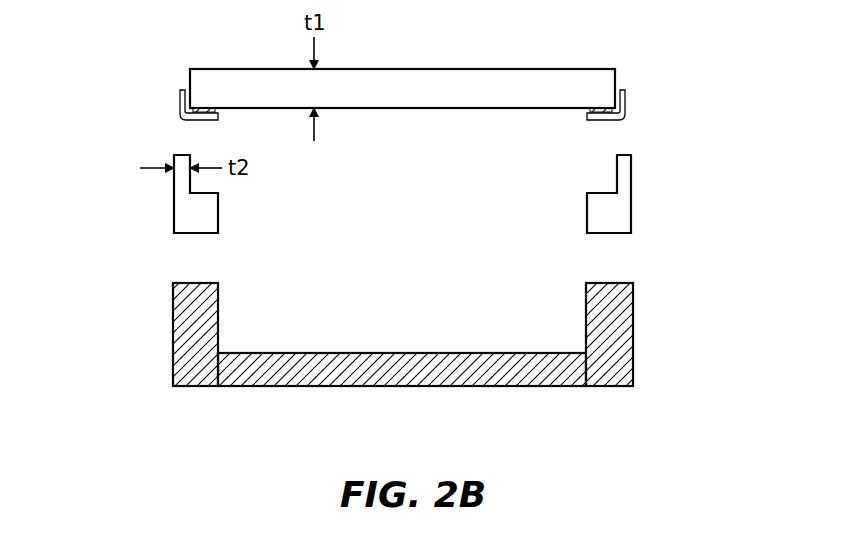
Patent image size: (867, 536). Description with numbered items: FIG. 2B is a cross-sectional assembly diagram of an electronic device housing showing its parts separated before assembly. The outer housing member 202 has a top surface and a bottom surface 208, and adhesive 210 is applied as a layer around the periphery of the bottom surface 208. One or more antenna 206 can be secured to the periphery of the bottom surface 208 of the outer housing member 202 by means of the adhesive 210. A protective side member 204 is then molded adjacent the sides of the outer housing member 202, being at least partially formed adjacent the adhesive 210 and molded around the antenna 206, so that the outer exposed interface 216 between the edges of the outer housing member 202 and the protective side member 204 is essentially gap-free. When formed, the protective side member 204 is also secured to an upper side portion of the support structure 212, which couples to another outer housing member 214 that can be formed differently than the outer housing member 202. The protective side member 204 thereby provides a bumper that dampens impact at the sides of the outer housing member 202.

The outer housing member 202 is at (402, 88).
The protective side member 204 is at (174, 215).
The antenna 206 is at (180, 100).
The bottom surface 208 is at (426, 110).
The adhesive 210 is at (215, 112).
The support structure 212 is at (173, 327).
The outer housing member 214 is at (316, 372).
The outer exposed interface 216 is at (191, 69).